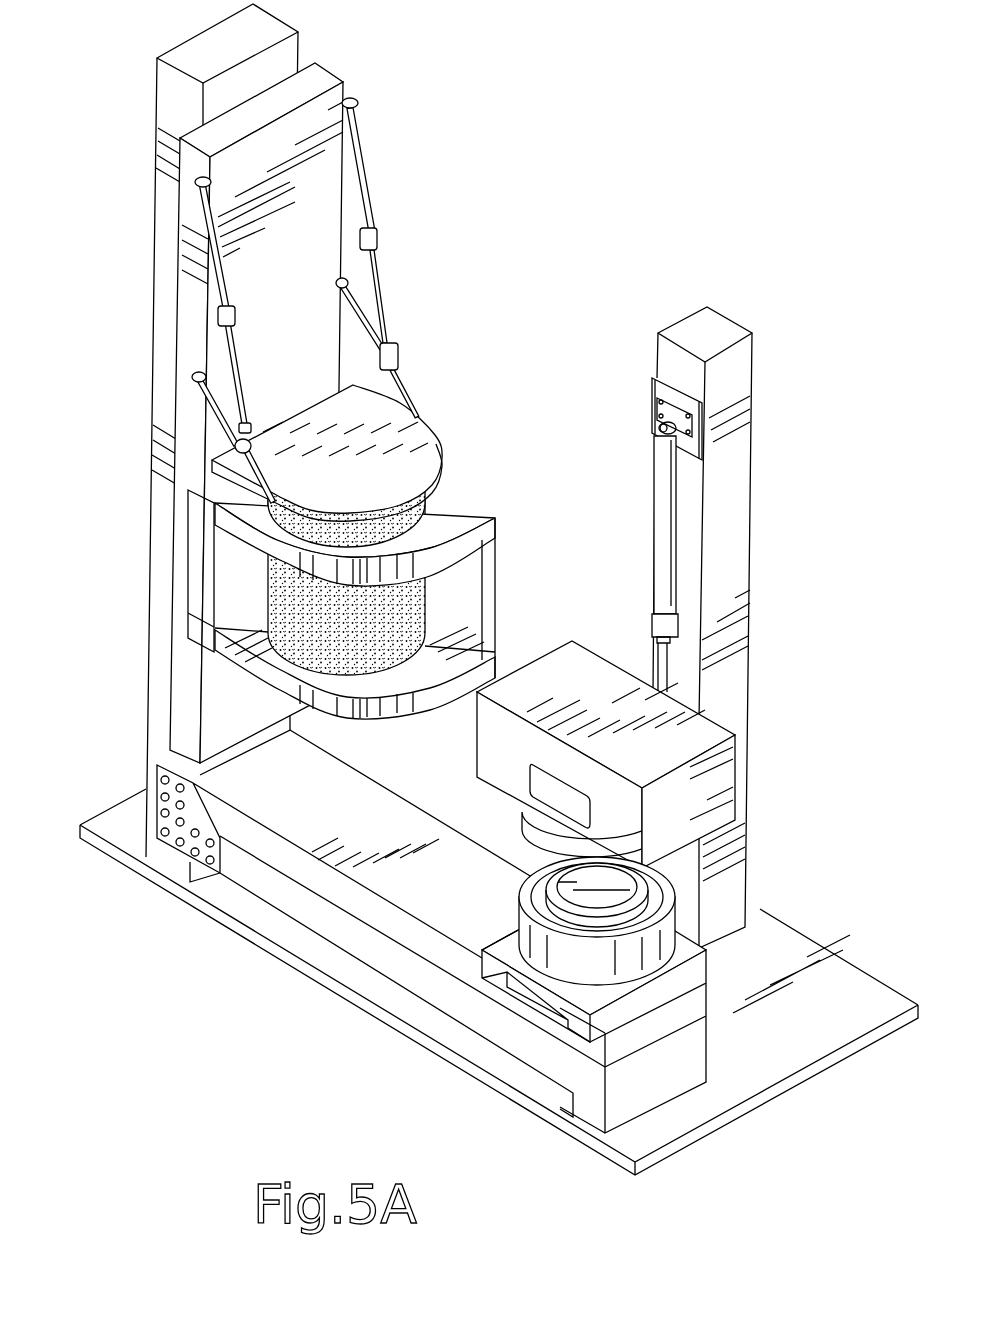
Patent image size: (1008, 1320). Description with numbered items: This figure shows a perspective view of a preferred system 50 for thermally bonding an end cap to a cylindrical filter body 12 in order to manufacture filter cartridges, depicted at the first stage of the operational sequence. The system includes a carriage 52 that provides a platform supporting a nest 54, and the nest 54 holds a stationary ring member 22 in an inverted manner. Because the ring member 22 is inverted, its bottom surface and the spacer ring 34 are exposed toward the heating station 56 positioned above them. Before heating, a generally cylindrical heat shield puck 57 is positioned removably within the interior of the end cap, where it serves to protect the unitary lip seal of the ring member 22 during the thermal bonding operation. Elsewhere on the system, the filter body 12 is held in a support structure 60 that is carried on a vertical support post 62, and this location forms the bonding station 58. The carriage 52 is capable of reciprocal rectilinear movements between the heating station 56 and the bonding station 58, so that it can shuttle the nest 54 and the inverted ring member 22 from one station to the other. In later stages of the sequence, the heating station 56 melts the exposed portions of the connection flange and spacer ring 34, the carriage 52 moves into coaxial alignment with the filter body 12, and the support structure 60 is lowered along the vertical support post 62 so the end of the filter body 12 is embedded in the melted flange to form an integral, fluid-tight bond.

The system 50 is at (609, 217).
The cylindrical filter body 12 is at (352, 645).
The stationary ring member 22 is at (663, 896).
The spacer ring 34 is at (540, 895).
The carriage 52 is at (620, 1003).
The nest 54 is at (559, 921).
The heating station 56 is at (710, 817).
The heat shield puck 57 is at (542, 865).
The bonding station 58 is at (228, 689).
The support structure 60 is at (447, 513).
The vertical support post 62 is at (293, 330).